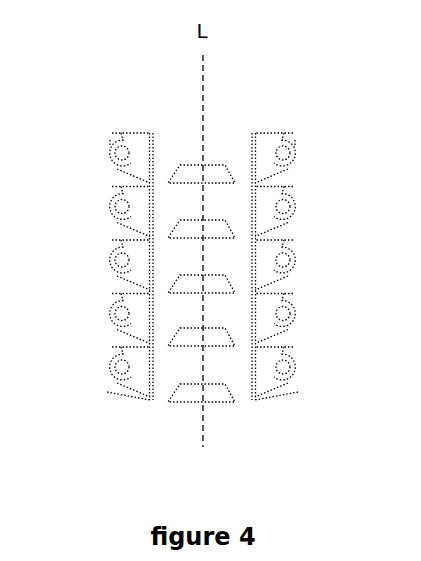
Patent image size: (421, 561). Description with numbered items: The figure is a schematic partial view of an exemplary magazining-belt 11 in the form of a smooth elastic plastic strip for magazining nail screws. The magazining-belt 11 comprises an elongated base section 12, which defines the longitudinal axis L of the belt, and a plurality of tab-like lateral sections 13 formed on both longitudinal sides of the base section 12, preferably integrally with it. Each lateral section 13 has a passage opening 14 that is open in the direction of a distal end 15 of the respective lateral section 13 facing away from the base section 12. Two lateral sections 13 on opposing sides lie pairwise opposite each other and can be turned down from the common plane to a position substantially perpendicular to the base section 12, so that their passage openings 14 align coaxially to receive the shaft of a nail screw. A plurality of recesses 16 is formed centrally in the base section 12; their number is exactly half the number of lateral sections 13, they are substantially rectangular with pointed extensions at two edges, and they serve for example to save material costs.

The magazining-belt 11 is at (253, 66).
The base section 12 is at (238, 378).
The lateral section 13 is at (123, 134).
The passage opening 14 is at (118, 152).
The distal end 15 is at (108, 142).
The recess 16 is at (216, 232).